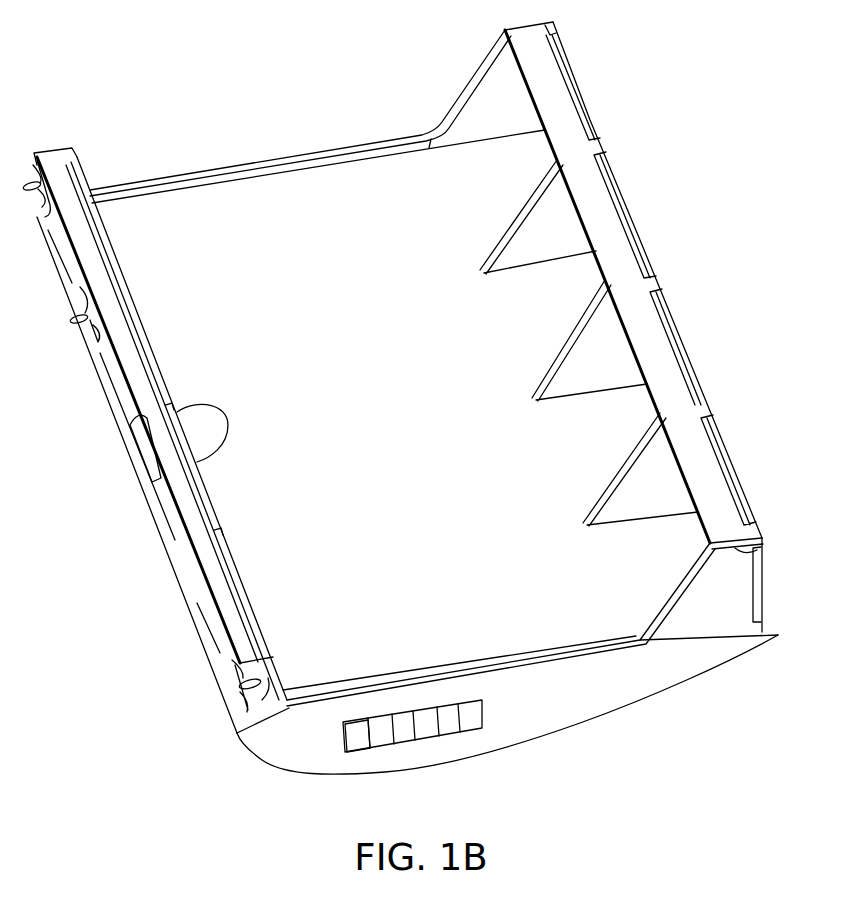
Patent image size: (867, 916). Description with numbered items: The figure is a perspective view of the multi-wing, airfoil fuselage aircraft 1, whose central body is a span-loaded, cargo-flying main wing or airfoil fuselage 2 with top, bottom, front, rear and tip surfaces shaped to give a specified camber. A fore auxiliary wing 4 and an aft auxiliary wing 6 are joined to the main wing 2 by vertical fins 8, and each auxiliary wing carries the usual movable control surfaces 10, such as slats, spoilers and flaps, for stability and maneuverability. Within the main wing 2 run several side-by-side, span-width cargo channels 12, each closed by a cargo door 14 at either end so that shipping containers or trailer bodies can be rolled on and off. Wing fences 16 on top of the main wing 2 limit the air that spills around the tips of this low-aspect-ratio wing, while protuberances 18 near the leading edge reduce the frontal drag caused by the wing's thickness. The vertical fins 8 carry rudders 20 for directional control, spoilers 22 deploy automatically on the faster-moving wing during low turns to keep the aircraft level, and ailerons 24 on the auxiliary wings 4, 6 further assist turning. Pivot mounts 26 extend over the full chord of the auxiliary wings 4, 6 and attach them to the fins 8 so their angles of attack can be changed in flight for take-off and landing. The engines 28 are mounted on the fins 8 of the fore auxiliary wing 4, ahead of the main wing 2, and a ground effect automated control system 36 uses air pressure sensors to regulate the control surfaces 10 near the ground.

The multi-wing, airfoil fuselage aircraft 1 is at (205, 142).
The main wing or airfoil fuselage 2 is at (648, 688).
The fore auxiliary wing 4 is at (55, 148).
The aft auxiliary wing 6 is at (660, 350).
The vertical fins 8 is at (728, 588).
The wing movable control surfaces 10 is at (723, 448).
The cargo channels 12 is at (408, 744).
The cargo door 14 is at (345, 738).
The wing fences 16 is at (277, 158).
The protuberances 18 is at (158, 534).
The rudders 20 is at (763, 564).
The spoilers 22 is at (573, 70).
The ailerons 24 is at (617, 186).
The pivot mounts 26 is at (762, 540).
The engines 28 is at (76, 324).
The ground effect automated control system 36 is at (143, 454).